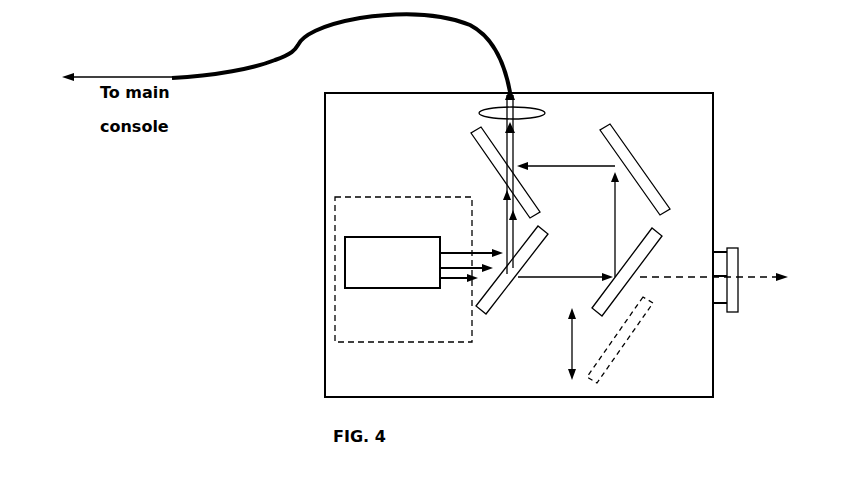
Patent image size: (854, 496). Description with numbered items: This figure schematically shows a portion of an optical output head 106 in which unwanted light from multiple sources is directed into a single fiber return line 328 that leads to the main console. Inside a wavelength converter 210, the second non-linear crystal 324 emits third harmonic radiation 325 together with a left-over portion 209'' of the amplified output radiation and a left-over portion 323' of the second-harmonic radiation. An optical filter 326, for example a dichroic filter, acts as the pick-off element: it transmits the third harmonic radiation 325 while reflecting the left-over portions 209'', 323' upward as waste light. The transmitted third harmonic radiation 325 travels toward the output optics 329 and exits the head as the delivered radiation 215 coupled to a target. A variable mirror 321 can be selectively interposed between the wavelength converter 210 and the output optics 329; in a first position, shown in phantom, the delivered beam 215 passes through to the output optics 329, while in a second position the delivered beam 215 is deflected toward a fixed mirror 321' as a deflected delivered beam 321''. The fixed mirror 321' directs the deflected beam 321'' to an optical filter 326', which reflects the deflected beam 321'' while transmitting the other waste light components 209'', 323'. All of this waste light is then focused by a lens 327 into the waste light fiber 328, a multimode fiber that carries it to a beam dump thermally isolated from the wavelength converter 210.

The optical output head 106 is at (575, 93).
The waste light fiber 328 is at (485, 50).
The lens 327 is at (478, 112).
The left-over portion of second-harmonic radiation 323' is at (451, 181).
The optical filter 326' is at (470, 172).
The deflected delivered beam 321'' is at (568, 195).
The fixed mirror 321' is at (643, 169).
The variable mirror 321 is at (647, 303).
The optical filter 326 is at (503, 296).
The wavelength converter 210 is at (407, 342).
The second non-linear crystal 324 is at (392, 289).
The left-over portion of amplified output radiation 209'' is at (460, 237).
The third harmonic radiation 325 is at (467, 283).
The delivered radiation 215 is at (567, 277).
The output optics 329 is at (728, 247).